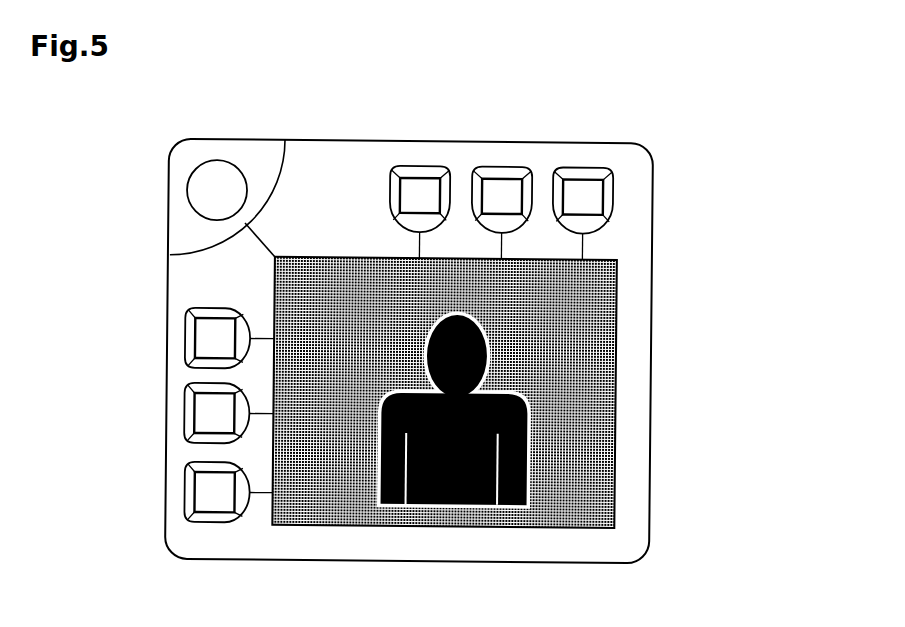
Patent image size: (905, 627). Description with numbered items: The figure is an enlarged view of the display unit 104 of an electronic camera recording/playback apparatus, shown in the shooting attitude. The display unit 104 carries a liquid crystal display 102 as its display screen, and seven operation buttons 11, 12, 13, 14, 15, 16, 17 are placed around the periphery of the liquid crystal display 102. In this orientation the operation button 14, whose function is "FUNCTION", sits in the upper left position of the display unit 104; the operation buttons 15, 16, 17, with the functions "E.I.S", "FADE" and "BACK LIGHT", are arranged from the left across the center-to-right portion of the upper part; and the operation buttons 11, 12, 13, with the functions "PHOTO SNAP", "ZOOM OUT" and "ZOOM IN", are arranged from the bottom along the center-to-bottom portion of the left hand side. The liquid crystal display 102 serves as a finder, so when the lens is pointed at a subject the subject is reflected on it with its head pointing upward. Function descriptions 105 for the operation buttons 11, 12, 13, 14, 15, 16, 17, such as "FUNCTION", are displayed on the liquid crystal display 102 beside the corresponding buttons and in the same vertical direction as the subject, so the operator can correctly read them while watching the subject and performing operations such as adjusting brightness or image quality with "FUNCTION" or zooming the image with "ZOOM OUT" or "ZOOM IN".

The operation button 11 is at (206, 494).
The operation button 12 is at (205, 417).
The operation button 13 is at (205, 342).
The operation button 14 is at (198, 193).
The operation button 15 is at (414, 190).
The operation button 16 is at (496, 190).
The operation button 17 is at (577, 189).
The liquid crystal display 102 is at (499, 430).
The display unit 104 is at (700, 156).
The function descriptions 105 is at (316, 513).